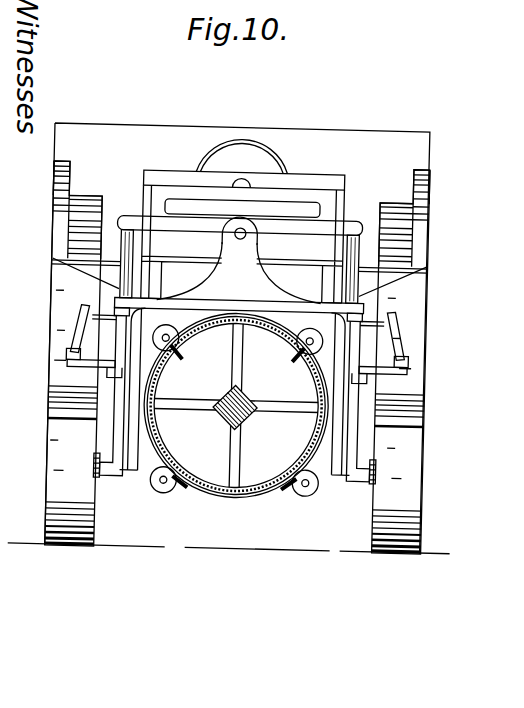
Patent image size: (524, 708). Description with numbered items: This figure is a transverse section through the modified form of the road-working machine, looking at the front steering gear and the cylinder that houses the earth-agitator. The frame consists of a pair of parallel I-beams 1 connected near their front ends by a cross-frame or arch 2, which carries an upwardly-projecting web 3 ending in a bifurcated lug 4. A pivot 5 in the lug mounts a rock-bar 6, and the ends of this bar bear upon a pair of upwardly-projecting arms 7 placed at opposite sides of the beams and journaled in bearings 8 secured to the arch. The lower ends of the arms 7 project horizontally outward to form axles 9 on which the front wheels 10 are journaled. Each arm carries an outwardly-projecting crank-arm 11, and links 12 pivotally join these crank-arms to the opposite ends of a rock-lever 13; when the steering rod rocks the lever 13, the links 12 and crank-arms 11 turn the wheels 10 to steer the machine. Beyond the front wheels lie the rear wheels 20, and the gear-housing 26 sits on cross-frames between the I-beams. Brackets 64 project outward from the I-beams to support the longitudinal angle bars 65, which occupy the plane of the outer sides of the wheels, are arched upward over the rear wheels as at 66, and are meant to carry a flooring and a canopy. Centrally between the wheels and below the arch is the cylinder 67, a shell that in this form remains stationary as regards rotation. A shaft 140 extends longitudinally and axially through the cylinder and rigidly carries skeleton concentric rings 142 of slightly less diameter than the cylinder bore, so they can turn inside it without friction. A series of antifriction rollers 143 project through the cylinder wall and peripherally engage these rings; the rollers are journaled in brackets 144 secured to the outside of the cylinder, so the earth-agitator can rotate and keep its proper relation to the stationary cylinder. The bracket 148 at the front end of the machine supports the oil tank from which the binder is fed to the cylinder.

The I-beams 1 is at (156, 280).
The cross-frame or arch 2 is at (247, 297).
The upwardly-projecting web 3 is at (239, 272).
The bifurcated lug 4 is at (235, 239).
The pivot 5 is at (247, 229).
The rock-bar 6 is at (139, 219).
The upwardly-projecting arms 7 is at (125, 241).
The bearings 8 is at (122, 302).
The axles 9 is at (116, 475).
The front wheels 10 is at (62, 480).
The crank-arms 11 is at (91, 365).
The links 12 is at (75, 340).
The rock-lever 13 is at (88, 307).
The rear wheels 20 is at (98, 209).
The gear-housing 26 is at (320, 157).
The brackets 64 is at (437, 277).
The longitudinal angle bars 65 is at (55, 261).
The arched portion of angle bars 66 is at (58, 165).
The cylinder 67 is at (246, 496).
The shaft 140 is at (232, 398).
The skeleton concentric rings 142 is at (175, 450).
The antifriction rollers 143 is at (171, 491).
The brackets 144 is at (182, 482).
The bracket 148 is at (166, 182).